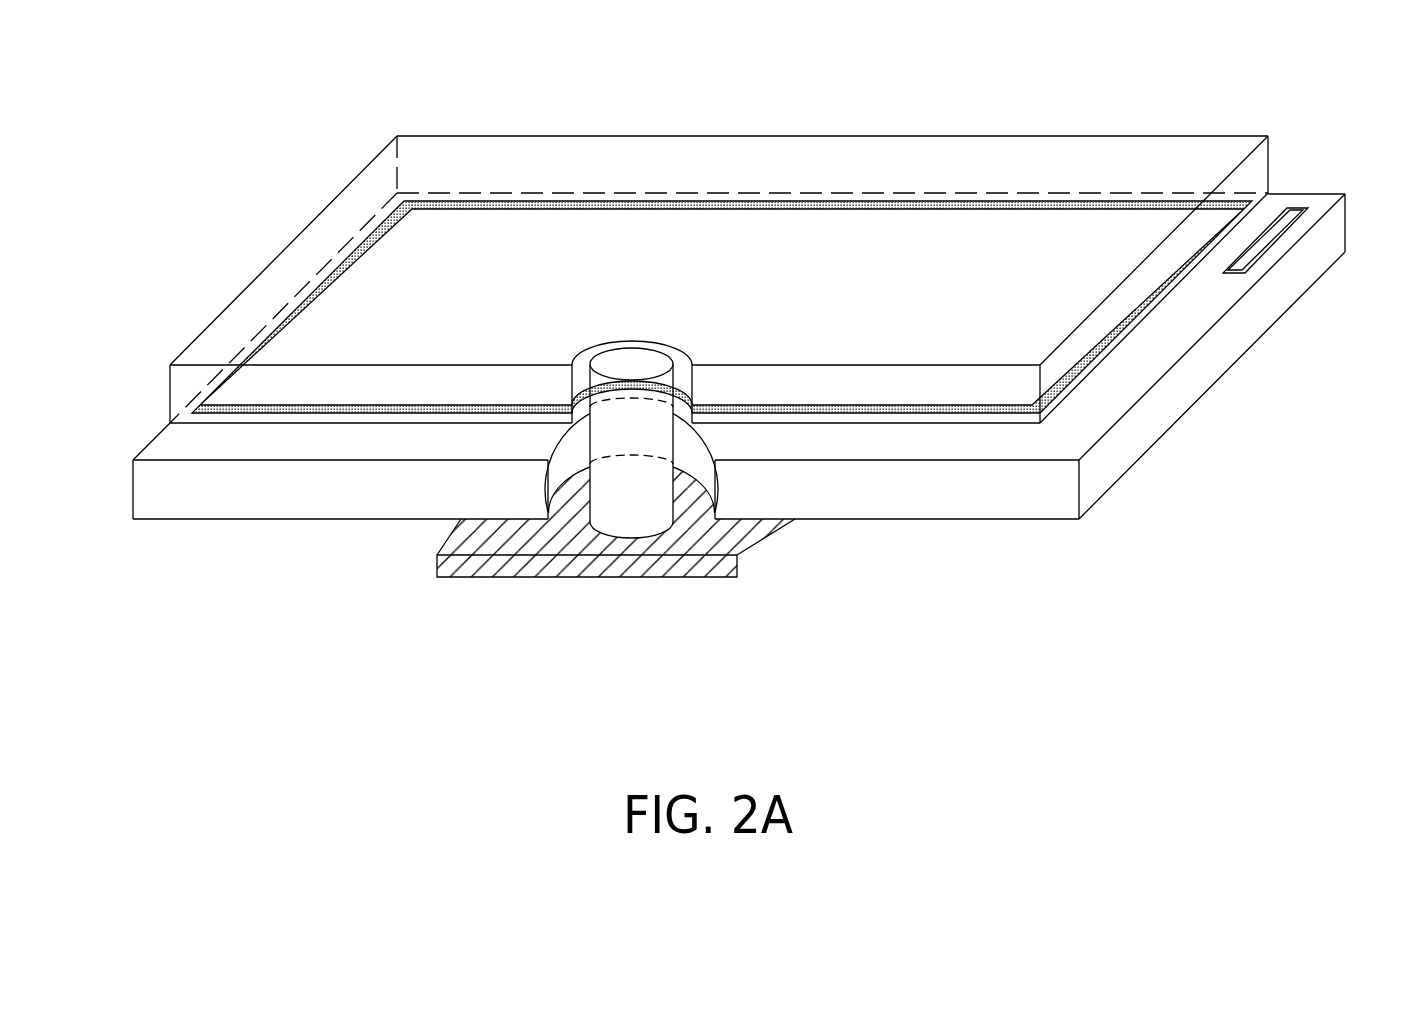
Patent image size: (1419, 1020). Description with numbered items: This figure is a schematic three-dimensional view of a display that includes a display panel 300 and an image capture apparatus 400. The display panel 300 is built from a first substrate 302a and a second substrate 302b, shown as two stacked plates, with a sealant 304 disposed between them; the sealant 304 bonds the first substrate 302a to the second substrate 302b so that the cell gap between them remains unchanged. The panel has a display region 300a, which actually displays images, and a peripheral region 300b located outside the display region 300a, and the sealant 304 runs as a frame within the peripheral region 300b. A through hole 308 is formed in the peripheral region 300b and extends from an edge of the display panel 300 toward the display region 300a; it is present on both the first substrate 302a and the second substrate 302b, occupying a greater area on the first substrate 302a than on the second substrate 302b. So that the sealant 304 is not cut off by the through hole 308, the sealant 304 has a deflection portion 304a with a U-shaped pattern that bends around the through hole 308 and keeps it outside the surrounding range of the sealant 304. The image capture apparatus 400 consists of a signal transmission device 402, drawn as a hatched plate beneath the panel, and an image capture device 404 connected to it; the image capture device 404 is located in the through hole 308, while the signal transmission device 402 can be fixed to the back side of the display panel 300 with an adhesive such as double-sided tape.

The display panel 300 is at (1226, 657).
The display region 300a is at (998, 234).
The peripheral region 300b is at (928, 454).
The first substrate 302a is at (1336, 230).
The second substrate 302b is at (1255, 173).
The sealant 304 is at (608, 207).
The deflection portion 304a is at (677, 392).
The through hole 308 is at (703, 468).
The image capture apparatus 400 is at (616, 534).
The signal transmission device 402 is at (527, 565).
The image capture device 404 is at (627, 500).